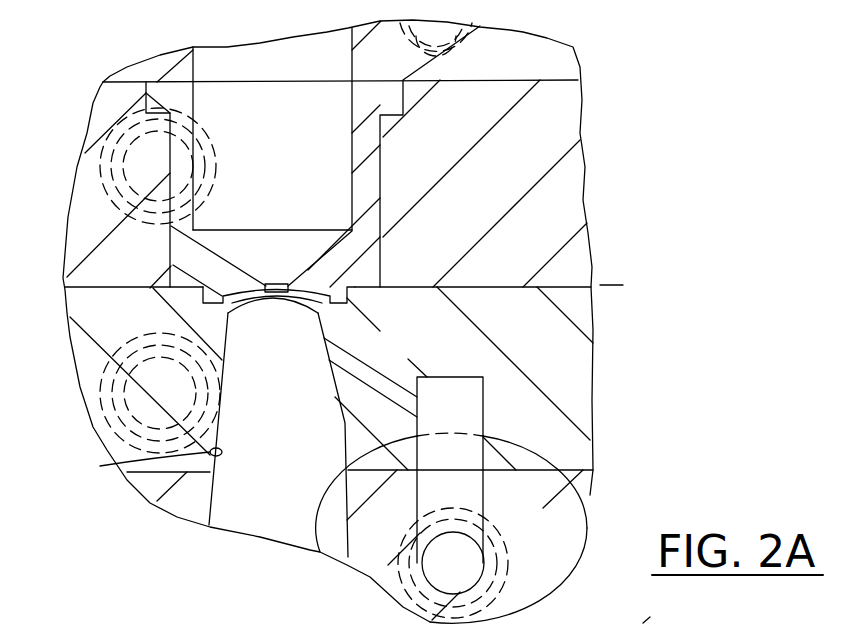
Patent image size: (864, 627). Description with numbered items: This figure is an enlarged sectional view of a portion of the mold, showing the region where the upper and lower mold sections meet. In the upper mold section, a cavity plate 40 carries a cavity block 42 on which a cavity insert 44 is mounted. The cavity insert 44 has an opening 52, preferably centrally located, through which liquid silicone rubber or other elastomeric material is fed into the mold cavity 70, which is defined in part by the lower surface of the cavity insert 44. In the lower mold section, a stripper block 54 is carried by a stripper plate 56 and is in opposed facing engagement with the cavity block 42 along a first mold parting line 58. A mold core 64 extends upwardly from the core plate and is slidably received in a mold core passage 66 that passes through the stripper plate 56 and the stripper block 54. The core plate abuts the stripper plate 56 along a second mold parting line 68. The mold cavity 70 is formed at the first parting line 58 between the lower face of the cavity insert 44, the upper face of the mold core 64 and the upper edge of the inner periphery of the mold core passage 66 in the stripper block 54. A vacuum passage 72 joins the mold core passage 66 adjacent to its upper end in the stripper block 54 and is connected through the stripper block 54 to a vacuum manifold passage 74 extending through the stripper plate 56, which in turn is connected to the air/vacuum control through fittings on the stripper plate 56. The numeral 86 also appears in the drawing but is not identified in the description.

The cavity plate 40 is at (497, 77).
The cavity block 42 is at (573, 168).
The cavity insert 44 is at (380, 180).
The opening 52 is at (277, 284).
The stripper block 54 is at (83, 341).
The stripper plate 56 is at (172, 498).
The first mold parting line 58 is at (603, 283).
The mold core 64 is at (260, 510).
The mold core passage 66 is at (100, 466).
The second mold parting line 68 is at (593, 469).
The mold cavity 70 is at (365, 263).
The vacuum passage 72 is at (362, 367).
The vacuum manifold passage 74 is at (462, 562).
The lower member 86 is at (666, 619).